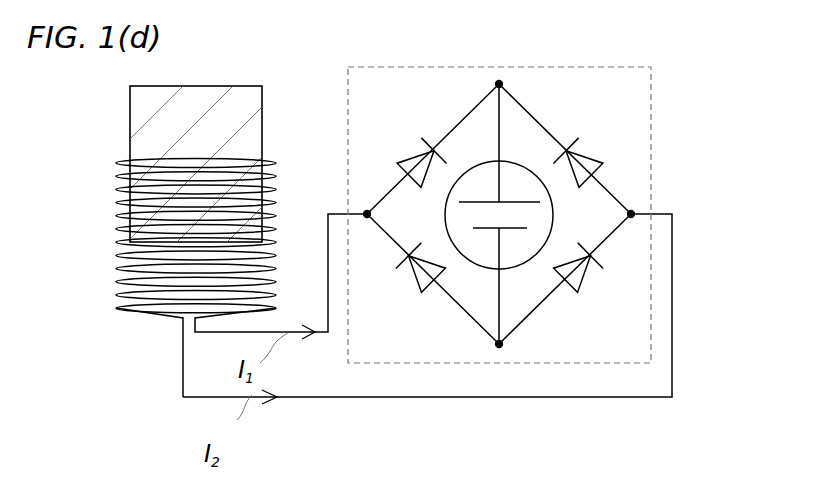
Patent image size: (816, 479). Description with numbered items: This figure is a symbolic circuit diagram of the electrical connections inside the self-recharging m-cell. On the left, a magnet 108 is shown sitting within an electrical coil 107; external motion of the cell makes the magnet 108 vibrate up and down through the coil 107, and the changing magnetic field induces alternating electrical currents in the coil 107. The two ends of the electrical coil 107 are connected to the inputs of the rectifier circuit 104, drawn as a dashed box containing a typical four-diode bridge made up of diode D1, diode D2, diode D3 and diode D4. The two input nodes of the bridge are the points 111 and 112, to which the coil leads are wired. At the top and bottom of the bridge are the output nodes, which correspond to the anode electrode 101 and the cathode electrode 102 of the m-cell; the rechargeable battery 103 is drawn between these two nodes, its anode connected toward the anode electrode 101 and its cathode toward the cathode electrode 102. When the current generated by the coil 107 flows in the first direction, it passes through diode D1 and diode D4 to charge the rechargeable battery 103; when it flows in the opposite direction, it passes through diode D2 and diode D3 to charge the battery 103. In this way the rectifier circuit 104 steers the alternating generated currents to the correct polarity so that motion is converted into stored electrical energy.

The anode electrode 101 is at (497, 83).
The cathode electrode 102 is at (501, 347).
The rechargeable battery 103 is at (513, 183).
The rectifier circuit 104 is at (395, 112).
The electrical coil 107 is at (118, 283).
The magnet 108 is at (186, 120).
The first input terminal 111 is at (365, 212).
The second input terminal 112 is at (636, 218).
The diode D1 is at (385, 173).
The diode D2 is at (590, 165).
The diode D3 is at (422, 283).
The diode D4 is at (592, 272).